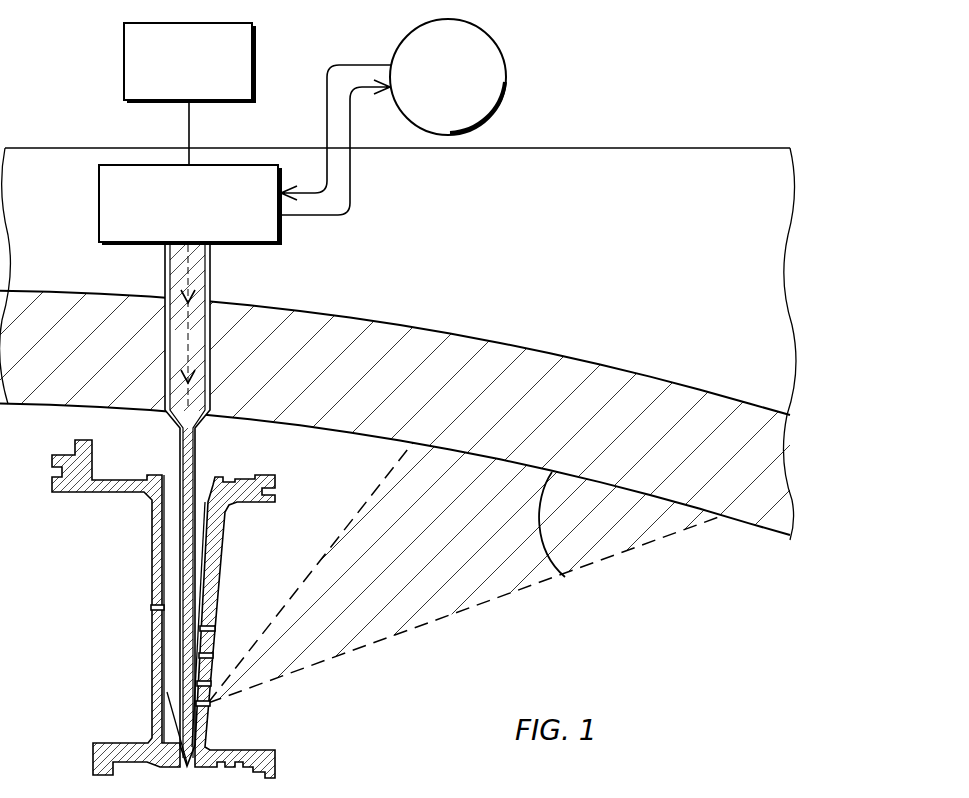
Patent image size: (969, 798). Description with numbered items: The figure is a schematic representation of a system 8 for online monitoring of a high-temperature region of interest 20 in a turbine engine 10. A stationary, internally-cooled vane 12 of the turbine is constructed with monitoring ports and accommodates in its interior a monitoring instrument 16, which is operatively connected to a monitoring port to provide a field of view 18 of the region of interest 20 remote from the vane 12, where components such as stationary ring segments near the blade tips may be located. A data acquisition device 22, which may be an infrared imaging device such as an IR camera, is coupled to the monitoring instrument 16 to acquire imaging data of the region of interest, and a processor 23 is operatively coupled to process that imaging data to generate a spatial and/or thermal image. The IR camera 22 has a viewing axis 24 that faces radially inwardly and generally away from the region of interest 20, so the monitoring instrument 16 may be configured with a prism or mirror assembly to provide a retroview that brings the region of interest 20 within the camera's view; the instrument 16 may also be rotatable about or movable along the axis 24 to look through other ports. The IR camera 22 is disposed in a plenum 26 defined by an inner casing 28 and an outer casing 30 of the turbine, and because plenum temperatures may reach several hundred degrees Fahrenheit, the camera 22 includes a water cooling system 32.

The system 8 is at (270, 76).
The turbine engine 10 is at (97, 663).
The vane 12 is at (152, 590).
The monitoring instrument 16 is at (188, 463).
The field of view 18 is at (480, 605).
The region of interest 20 is at (565, 577).
The data acquisition device 22 is at (99, 193).
The processor 23 is at (124, 52).
The viewing axis 24 is at (188, 262).
The plenum 26 is at (522, 248).
The inner casing 28 is at (513, 345).
The outer casing 30 is at (603, 148).
The water cooling system 32 is at (500, 52).